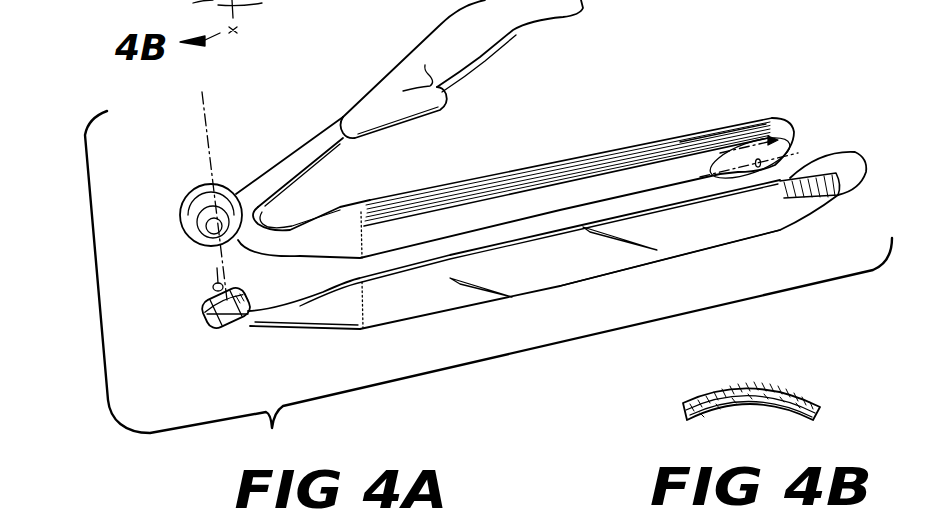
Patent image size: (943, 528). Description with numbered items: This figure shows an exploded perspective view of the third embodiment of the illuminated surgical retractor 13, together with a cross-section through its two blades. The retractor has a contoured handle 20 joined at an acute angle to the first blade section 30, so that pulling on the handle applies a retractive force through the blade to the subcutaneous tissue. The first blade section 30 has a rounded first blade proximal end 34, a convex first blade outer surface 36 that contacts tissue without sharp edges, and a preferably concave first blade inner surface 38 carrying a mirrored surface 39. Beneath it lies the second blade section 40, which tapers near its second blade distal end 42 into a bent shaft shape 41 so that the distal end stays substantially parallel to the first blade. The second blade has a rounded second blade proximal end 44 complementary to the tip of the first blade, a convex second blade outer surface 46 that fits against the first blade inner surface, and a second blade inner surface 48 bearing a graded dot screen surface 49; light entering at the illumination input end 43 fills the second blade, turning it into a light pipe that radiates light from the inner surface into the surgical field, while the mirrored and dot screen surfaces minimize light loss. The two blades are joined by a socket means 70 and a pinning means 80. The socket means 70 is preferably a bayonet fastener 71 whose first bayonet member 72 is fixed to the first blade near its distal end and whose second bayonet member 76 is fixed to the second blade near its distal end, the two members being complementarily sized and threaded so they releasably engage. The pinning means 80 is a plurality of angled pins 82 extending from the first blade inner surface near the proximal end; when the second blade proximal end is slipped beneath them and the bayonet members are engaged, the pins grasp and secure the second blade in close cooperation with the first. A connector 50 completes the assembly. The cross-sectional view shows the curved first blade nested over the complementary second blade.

In FIG. 4A, the illuminated surgical retractor 13 is at (483, 50).
In FIG. 4A, the handle 20 is at (440, 35).
In FIG. 4A, the first blade section 30 is at (517, 170).
In FIG. 4A, the first blade proximal end 34 is at (787, 133).
In FIG. 4A, the first blade outer surface 36 is at (597, 150).
In FIG. 4B, the first blade outer surface 36 is at (725, 386).
In FIG. 4A, the first blade inner surface 38 is at (677, 157).
In FIG. 4B, the first blade inner surface 38 is at (780, 388).
In FIG. 4A, the mirrored surface 39 is at (465, 200).
In FIG. 4A, the second blade section 40 is at (608, 270).
In FIG. 4A, the shaft shape 41 is at (232, 328).
In FIG. 4A, the second blade distal end 42 is at (224, 284).
In FIG. 4A, the illumination input end 43 is at (213, 288).
In FIG. 4A, the second blade proximal end 44 is at (820, 197).
In FIG. 4A, the second blade outer surface 46 is at (740, 242).
In FIG. 4B, the second blade outer surface 46 is at (720, 411).
In FIG. 4A, the second blade inner surface 48 is at (548, 270).
In FIG. 4B, the second blade inner surface 48 is at (767, 411).
In FIG. 4A, the graded dot screen surface 49 is at (481, 283).
In FIG. 4A, the connector 50 is at (190, 190).
In FIG. 4A, the socket means 70 is at (176, 213).
In FIG. 4A, the bayonet fastener 71 is at (234, 190).
In FIG. 4A, the first bayonet member 72 is at (178, 199).
In FIG. 4A, the second bayonet member 76 is at (210, 313).
In FIG. 4A, the pinning means 80 is at (757, 127).
In FIG. 4A, the angled pins 82 is at (753, 130).